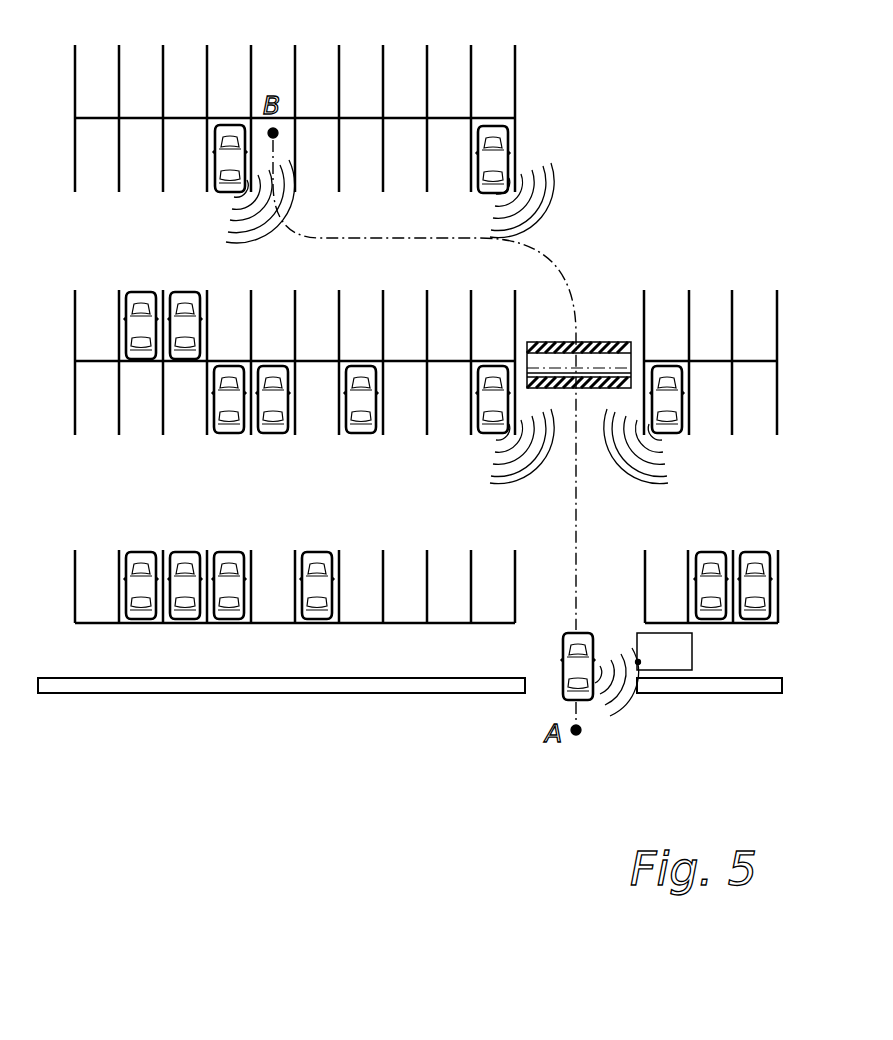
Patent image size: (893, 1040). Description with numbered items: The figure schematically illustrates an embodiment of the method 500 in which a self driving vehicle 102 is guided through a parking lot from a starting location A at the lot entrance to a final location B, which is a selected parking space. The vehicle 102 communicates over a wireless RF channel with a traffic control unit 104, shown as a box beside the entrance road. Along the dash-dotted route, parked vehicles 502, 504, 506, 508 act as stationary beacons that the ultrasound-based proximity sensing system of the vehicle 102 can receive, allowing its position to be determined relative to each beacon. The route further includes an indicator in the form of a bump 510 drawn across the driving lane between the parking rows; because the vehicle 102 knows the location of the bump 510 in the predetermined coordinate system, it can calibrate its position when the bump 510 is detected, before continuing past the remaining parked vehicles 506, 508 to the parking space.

The route path 500 is at (560, 273).
The bump 510 is at (604, 342).
The parked vehicle 508 is at (232, 127).
The parked vehicle 506 is at (512, 162).
The parked vehicle 504 is at (485, 414).
The parked vehicle 502 is at (673, 413).
The self driving vehicle 102 is at (572, 674).
The traffic control unit 104 is at (640, 664).